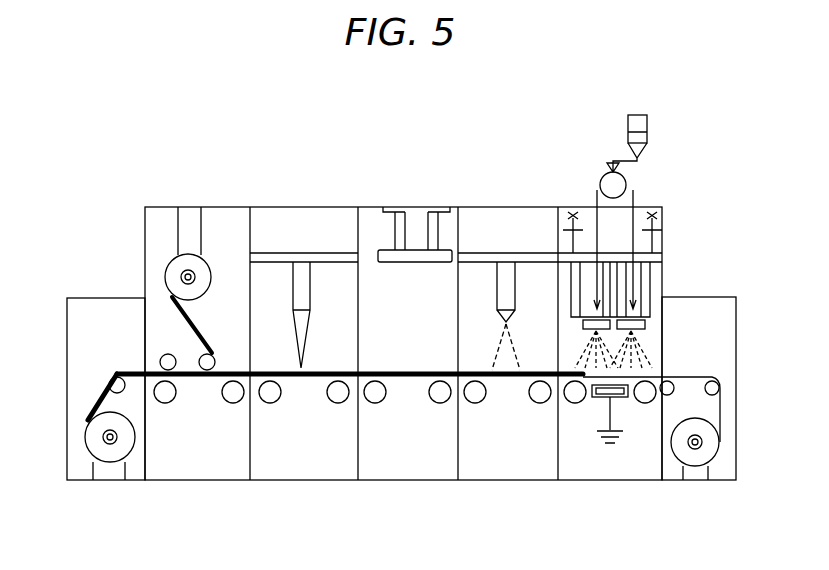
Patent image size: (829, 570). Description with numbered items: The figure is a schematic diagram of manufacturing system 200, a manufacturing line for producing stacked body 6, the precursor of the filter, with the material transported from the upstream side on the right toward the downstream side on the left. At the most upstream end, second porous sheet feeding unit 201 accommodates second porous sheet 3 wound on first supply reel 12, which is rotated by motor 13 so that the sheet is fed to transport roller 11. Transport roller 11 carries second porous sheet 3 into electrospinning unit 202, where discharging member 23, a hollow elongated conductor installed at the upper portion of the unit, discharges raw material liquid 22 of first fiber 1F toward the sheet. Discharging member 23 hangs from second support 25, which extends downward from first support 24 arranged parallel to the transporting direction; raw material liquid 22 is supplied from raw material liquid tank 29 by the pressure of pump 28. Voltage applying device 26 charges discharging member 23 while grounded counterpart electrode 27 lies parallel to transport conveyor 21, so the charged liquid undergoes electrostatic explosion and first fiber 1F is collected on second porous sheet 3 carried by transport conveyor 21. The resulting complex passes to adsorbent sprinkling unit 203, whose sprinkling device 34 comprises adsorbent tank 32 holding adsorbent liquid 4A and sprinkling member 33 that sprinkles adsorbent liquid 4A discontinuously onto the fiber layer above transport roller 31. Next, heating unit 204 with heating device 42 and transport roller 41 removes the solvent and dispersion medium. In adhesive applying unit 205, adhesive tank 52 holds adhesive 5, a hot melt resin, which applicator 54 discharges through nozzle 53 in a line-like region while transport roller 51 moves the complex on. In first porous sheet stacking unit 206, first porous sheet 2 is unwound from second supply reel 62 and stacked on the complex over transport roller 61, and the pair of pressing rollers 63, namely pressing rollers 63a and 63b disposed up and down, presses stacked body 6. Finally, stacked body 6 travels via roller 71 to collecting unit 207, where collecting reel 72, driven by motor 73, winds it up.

The manufacturing system 200 is at (187, 168).
The first porous sheet 2 is at (210, 345).
The second porous sheet 3 is at (722, 410).
The adhesive 5 is at (300, 360).
The stacked body 6 is at (95, 397).
The transport roller 11 is at (716, 383).
The first supply reel 12 is at (712, 442).
The motor 13 is at (705, 475).
The first fiber 1F is at (650, 352).
The transport conveyor 21 is at (600, 399).
The raw material liquid 22 is at (648, 135).
The discharging member 23 is at (662, 298).
The first support 24 is at (662, 257).
The second support 25 is at (652, 300).
The voltage applying device 26 is at (658, 230).
The counterpart electrode 27 is at (622, 399).
The pump 28 is at (627, 180).
The raw material liquid tank 29 is at (648, 122).
The transport roller 31 is at (477, 402).
The adsorbent tank 32 is at (505, 277).
The sprinkling member 33 is at (515, 320).
The sprinkling device 34 is at (463, 171).
The adsorbent liquid 4A is at (493, 339).
The transport roller 41 is at (377, 402).
The heating device 42 is at (383, 237).
The transport roller 51 is at (272, 402).
The adhesive tank 52 is at (300, 277).
The nozzle 53 is at (309, 320).
The applicator 54 is at (258, 171).
The transport roller 61 is at (233, 400).
The second supply reel 62 is at (163, 253).
The pressing rollers 63 is at (72, 232).
The pressing roller 63a is at (175, 266).
The pressing roller 63b is at (165, 352).
The roller 71 is at (100, 372).
The collecting reel 72 is at (93, 428).
The motor 73 is at (100, 473).
The second porous sheet feeding unit 201 is at (665, 488).
The electrospinning unit 202 is at (560, 495).
The adsorbent sprinkling unit 203 is at (460, 495).
The heating unit 204 is at (360, 495).
The adhesive applying unit 205 is at (252, 495).
The first porous sheet stacking unit 206 is at (248, 495).
The collecting unit 207 is at (67, 495).